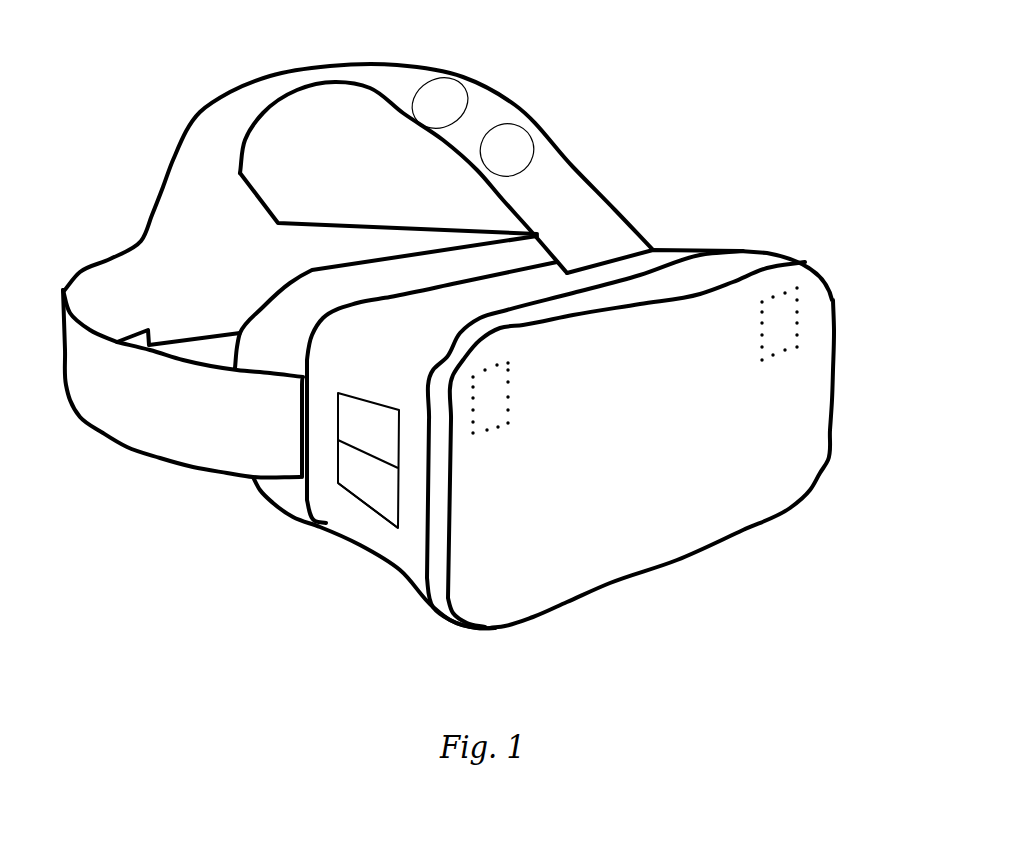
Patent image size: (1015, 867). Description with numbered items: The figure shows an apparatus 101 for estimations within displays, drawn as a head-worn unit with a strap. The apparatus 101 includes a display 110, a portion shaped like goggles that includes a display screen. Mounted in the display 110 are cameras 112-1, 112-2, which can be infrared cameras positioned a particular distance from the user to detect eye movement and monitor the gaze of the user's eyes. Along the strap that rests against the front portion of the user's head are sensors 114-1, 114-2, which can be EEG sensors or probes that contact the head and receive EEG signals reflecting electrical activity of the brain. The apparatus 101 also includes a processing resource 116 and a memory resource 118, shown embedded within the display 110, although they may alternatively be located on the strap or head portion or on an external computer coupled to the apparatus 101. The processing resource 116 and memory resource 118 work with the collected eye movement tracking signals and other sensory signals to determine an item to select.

The apparatus 101 is at (756, 96).
The display 110 is at (860, 337).
The camera 112-1 is at (508, 387).
The camera 112-2 is at (798, 310).
The sensor 114-1 is at (459, 86).
The sensor 114-2 is at (523, 130).
The processing resource 116 is at (357, 397).
The memory resource 118 is at (350, 490).